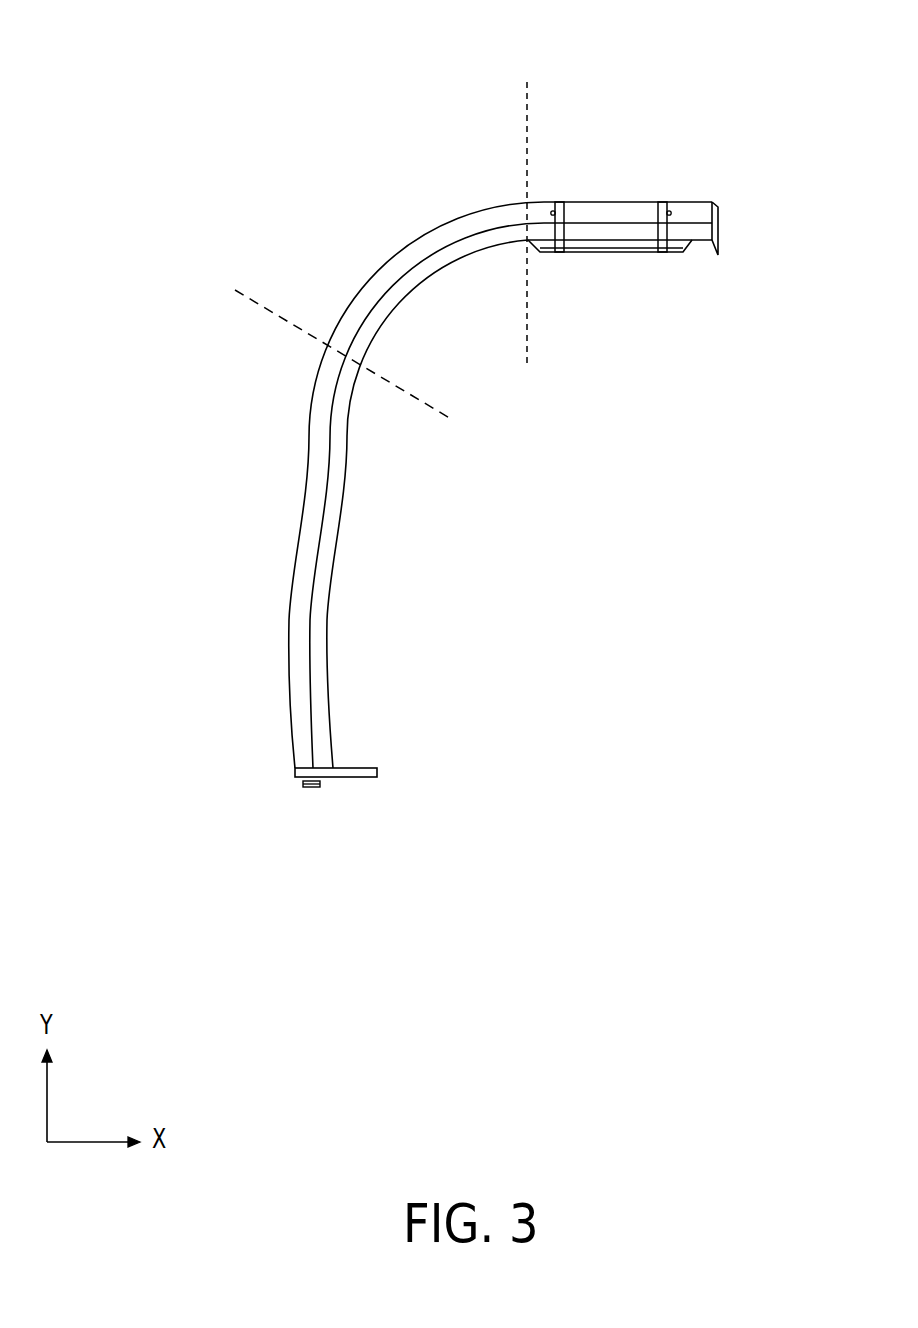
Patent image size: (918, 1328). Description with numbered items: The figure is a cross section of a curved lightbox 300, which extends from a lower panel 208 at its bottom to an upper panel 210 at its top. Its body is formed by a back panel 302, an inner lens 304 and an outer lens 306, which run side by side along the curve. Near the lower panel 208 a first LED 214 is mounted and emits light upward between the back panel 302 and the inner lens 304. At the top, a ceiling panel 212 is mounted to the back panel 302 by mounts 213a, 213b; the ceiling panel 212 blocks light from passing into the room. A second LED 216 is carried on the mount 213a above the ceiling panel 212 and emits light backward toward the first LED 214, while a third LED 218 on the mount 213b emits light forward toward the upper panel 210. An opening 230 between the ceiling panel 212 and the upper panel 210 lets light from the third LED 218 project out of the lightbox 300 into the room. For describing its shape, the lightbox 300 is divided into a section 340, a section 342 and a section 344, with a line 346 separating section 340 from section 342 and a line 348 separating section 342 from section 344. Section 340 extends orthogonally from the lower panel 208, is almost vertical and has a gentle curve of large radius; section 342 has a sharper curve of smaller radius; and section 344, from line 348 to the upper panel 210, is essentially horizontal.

The lightbox 300 is at (150, 105).
The lower panel 208 is at (295, 773).
The upper panel 210 is at (718, 205).
The ceiling panel 212 is at (592, 250).
The mount 213a is at (560, 205).
The mount 213b is at (662, 205).
The first LED 214 is at (312, 790).
The second LED 216 is at (553, 205).
The third LED 218 is at (672, 211).
The opening 230 is at (701, 274).
The back panel 302 is at (291, 580).
The inner lens 304 is at (318, 515).
The outer lens 306 is at (335, 493).
The section 340 is at (252, 367).
The section 342 is at (402, 154).
The section 344 is at (662, 42).
The line 346 is at (238, 281).
The line 348 is at (545, 79).